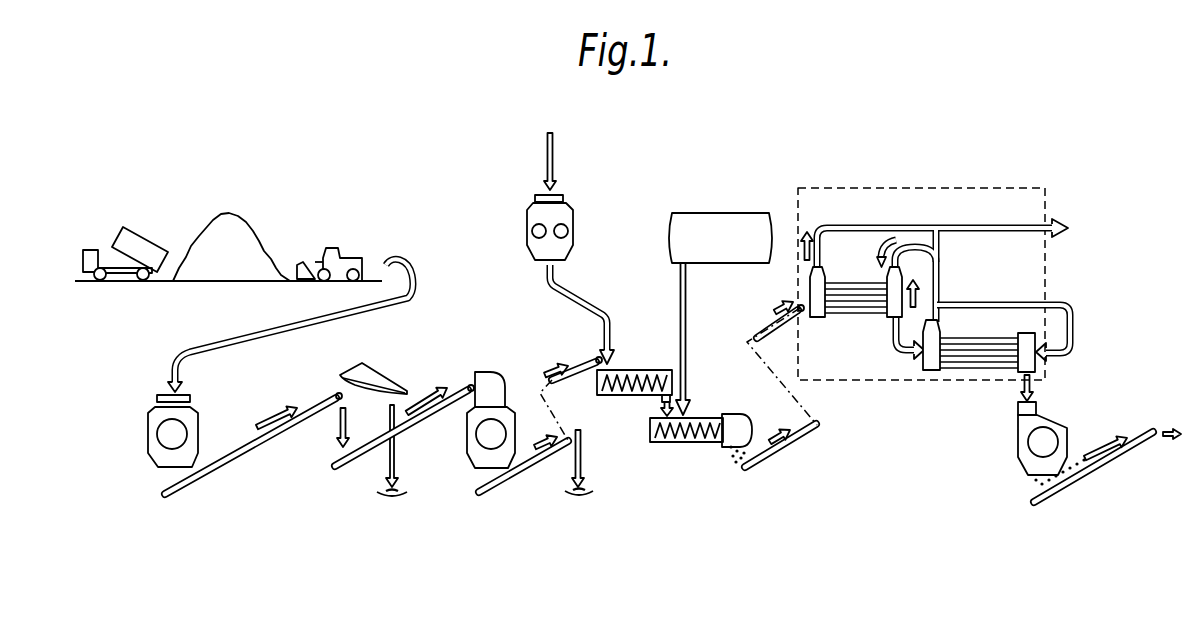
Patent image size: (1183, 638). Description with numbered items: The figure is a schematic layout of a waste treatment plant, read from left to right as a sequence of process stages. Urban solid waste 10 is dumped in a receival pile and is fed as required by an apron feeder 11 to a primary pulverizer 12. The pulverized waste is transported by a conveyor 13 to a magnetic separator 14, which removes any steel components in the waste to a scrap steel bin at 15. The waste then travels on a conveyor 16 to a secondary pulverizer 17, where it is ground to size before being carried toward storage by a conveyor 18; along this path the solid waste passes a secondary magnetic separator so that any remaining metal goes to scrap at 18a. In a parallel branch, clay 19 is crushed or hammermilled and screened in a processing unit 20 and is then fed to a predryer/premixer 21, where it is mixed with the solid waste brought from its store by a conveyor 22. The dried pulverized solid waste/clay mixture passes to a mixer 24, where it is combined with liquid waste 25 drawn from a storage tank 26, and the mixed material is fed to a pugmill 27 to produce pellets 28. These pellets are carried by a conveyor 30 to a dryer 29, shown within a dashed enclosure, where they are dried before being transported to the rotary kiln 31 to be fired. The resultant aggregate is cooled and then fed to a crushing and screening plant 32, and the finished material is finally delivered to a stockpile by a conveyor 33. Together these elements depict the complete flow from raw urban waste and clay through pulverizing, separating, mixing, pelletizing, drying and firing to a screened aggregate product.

The urban solid waste 10 is at (268, 240).
The apron feeder 11 is at (413, 297).
The primary pulverizer 12 is at (190, 415).
The conveyor 13 is at (237, 458).
The magnetic separator 14 is at (380, 378).
The scrap steel bin 15 is at (397, 471).
The conveyor 16 is at (422, 422).
The secondary pulverizer 17 is at (508, 417).
The conveyor 18 is at (498, 487).
The scrap 18a is at (587, 487).
The clay 19 is at (553, 152).
The processing unit 20 is at (572, 218).
The predryer/premixer 21 is at (641, 370).
The conveyor 22 is at (591, 359).
The mixer 24 is at (683, 443).
The liquid waste 25 is at (688, 314).
The storage tank 26 is at (734, 248).
The pugmill 27 is at (733, 440).
The pellets 28 is at (759, 428).
The dryer 29 is at (852, 318).
The conveyor 30 is at (797, 318).
The rotary kiln 31 is at (975, 375).
The crushing and screening plant 32 is at (1052, 418).
The conveyor 33 is at (1097, 470).